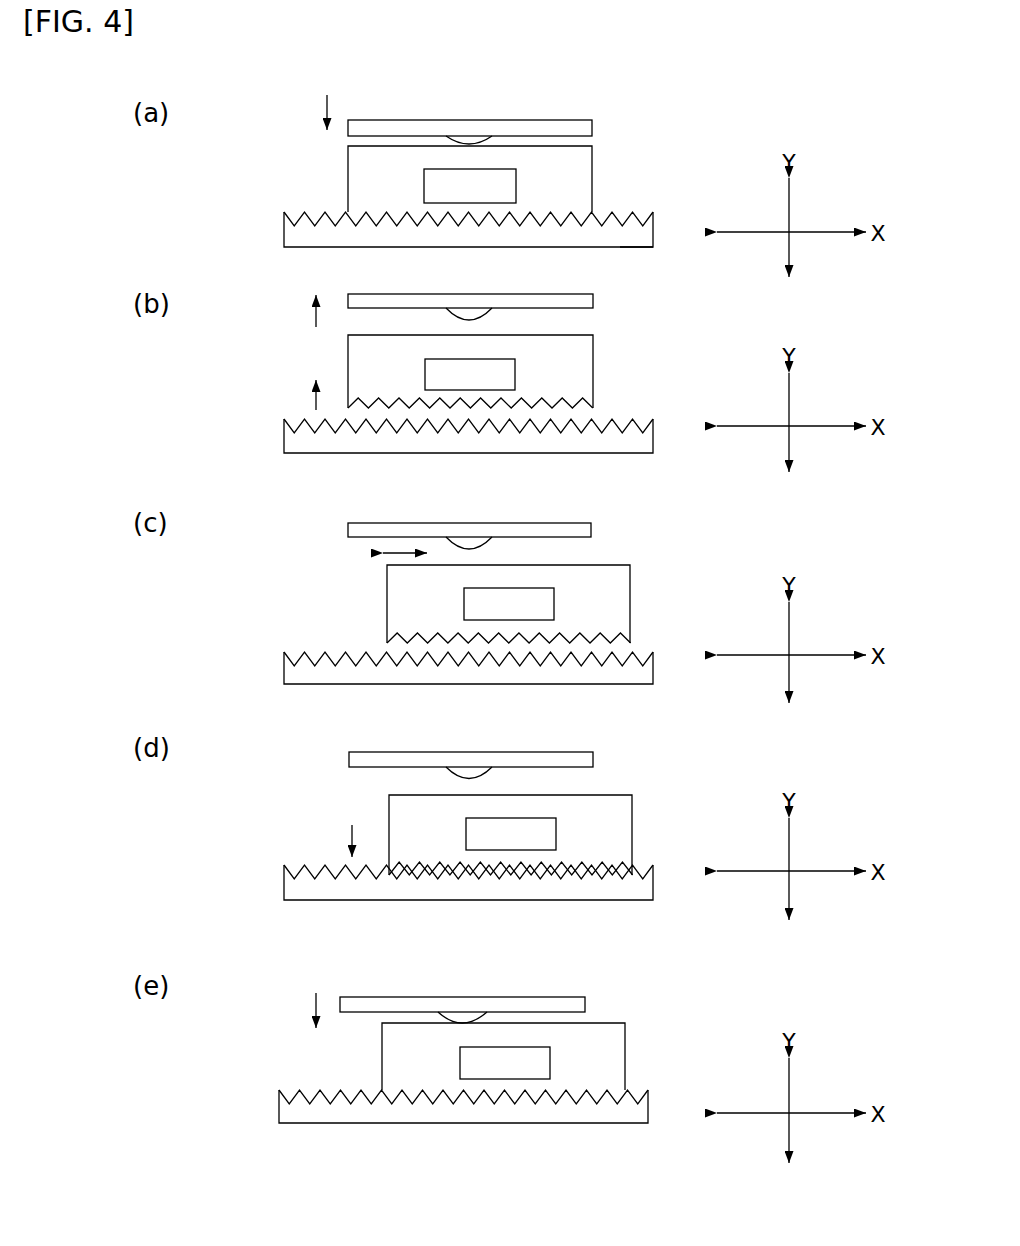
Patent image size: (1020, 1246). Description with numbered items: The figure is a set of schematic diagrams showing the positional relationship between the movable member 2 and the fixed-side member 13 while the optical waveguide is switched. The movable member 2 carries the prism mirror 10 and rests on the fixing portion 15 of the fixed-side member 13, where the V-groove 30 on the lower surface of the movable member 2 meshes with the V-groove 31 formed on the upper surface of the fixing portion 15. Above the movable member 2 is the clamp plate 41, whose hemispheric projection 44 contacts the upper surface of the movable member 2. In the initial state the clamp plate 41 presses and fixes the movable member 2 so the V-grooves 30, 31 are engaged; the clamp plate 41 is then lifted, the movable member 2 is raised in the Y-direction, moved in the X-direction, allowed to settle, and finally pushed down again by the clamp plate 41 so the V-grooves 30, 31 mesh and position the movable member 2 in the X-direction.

The movable member 2 is at (337, 180).
The prism mirror 10 is at (498, 188).
The fixed-side member 13 is at (284, 236).
The fixing portion 15 is at (633, 238).
The V-groove 30 is at (542, 215).
The V-groove 31 is at (600, 425).
The clamp plate 41 is at (423, 128).
The hemispheric projection 44 is at (477, 140).